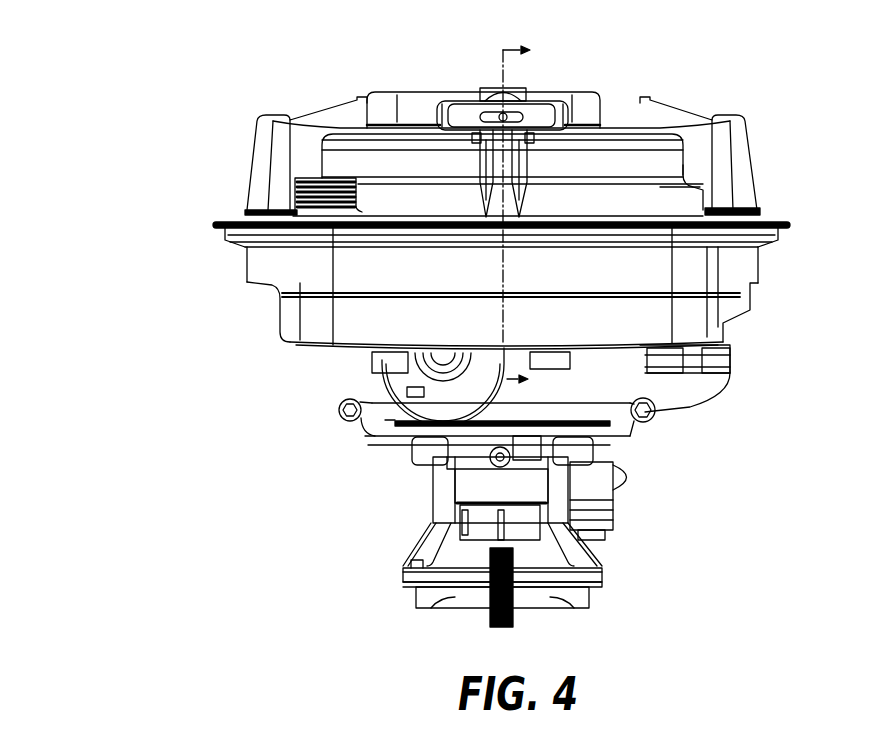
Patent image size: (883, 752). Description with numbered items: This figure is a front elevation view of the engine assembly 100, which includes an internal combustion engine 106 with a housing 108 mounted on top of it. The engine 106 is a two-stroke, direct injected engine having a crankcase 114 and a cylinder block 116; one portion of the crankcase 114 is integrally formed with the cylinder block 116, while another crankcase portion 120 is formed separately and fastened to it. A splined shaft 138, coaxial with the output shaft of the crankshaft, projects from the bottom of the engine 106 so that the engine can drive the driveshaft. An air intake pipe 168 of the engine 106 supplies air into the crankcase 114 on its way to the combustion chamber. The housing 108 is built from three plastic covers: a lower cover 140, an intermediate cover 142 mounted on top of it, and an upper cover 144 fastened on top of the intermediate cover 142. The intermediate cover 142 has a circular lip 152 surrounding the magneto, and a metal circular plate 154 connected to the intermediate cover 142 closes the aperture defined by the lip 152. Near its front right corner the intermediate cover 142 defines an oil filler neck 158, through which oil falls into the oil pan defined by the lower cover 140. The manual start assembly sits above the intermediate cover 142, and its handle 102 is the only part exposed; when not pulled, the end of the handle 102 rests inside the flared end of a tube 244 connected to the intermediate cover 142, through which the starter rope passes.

The engine assembly 100 is at (175, 86).
The handle 102 is at (550, 108).
The internal combustion engine 106 is at (655, 482).
The housing 108 is at (800, 186).
The crankcase 114 is at (335, 390).
The cylinder block 116 is at (430, 497).
The crankcase portion 120 is at (567, 380).
The splined shaft 138 is at (517, 618).
The lower cover 140 is at (727, 305).
The intermediate cover 142 is at (653, 187).
The upper cover 144 is at (742, 150).
The circular lip 152 is at (340, 163).
The circular plate 154 is at (392, 127).
The oil filler neck 158 is at (290, 187).
The air intake pipe 168 is at (720, 377).
The tube 244 is at (517, 84).